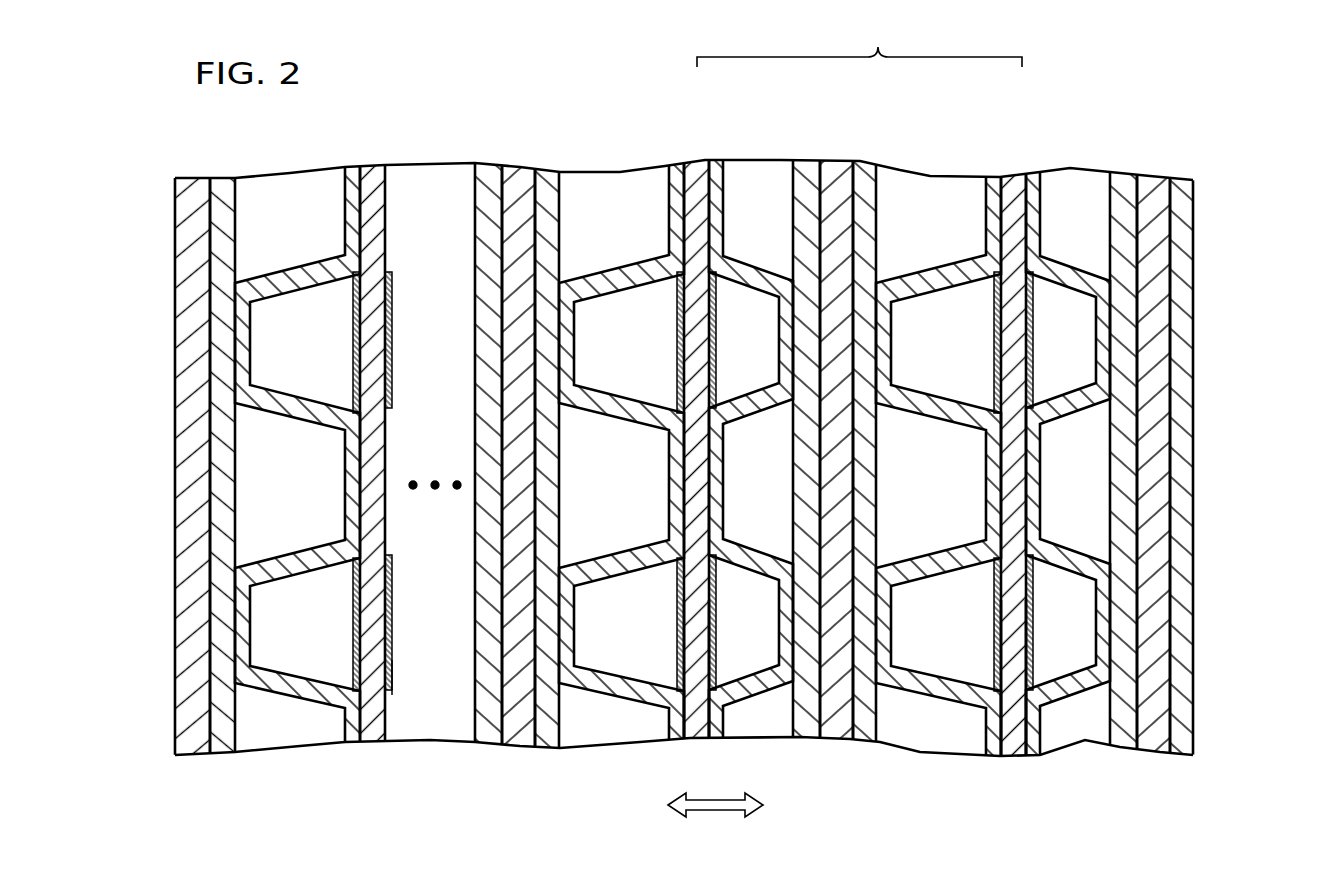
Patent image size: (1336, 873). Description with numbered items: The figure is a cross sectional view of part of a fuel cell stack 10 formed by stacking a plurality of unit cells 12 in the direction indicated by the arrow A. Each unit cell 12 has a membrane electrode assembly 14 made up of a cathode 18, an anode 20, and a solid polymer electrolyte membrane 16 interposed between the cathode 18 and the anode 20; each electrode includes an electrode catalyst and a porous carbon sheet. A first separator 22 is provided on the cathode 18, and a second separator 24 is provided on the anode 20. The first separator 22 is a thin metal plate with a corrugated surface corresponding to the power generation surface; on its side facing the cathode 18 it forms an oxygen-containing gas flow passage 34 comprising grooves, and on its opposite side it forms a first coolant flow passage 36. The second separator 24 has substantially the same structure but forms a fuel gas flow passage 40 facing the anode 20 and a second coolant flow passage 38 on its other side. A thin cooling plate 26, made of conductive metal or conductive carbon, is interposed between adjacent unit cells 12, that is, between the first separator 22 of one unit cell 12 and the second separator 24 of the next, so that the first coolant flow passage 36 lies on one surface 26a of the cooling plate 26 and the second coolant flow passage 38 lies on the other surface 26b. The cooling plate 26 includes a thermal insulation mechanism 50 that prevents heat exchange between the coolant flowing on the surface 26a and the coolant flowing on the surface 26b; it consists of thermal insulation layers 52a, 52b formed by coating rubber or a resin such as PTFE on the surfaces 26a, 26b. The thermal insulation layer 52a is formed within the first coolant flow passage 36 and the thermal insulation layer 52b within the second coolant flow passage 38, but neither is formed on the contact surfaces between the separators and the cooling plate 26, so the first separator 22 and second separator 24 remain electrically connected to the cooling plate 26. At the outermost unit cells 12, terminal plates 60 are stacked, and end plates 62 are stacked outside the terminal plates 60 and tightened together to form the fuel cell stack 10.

The fuel cell stack 10 is at (492, 85).
The unit cell 12 is at (859, 38).
The membrane electrode assembly 14 is at (821, 448).
The solid polymer electrolyte membrane 16 is at (518, 195).
The cathode 18 is at (552, 183).
The anode 20 is at (485, 180).
The first separator 22 is at (675, 180).
The second separator 24 is at (716, 178).
The cooling plate 26 is at (372, 180).
The surface of the cooling plate 26a is at (682, 730).
The other surface of the cooling plate 26b is at (725, 727).
The oxygen-containing gas flow passage 34 is at (616, 463).
The first coolant flow passage 36 is at (157, 363).
The second coolant flow passage 38 is at (1218, 637).
The fuel gas flow passage 40 is at (920, 333).
The thermal insulation mechanism 50 is at (403, 688).
The thermal insulation layer 52a is at (353, 307).
The thermal insulation layer 52b is at (393, 300).
The terminal plate 60 is at (222, 190).
The end plate 62 is at (190, 193).
The stacking direction A is at (715, 793).